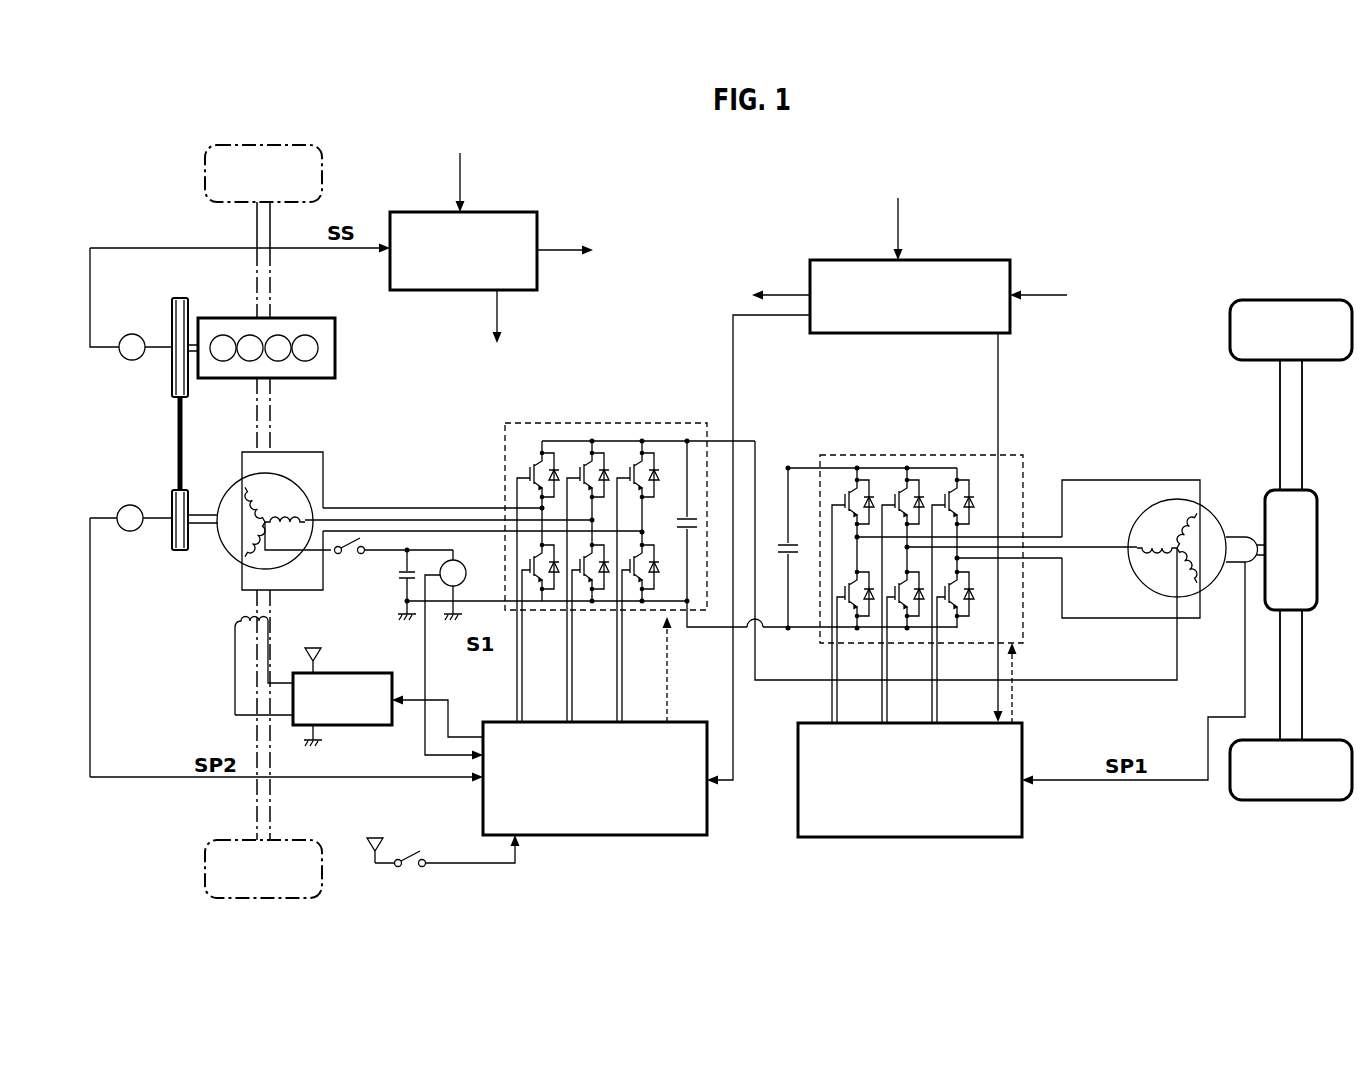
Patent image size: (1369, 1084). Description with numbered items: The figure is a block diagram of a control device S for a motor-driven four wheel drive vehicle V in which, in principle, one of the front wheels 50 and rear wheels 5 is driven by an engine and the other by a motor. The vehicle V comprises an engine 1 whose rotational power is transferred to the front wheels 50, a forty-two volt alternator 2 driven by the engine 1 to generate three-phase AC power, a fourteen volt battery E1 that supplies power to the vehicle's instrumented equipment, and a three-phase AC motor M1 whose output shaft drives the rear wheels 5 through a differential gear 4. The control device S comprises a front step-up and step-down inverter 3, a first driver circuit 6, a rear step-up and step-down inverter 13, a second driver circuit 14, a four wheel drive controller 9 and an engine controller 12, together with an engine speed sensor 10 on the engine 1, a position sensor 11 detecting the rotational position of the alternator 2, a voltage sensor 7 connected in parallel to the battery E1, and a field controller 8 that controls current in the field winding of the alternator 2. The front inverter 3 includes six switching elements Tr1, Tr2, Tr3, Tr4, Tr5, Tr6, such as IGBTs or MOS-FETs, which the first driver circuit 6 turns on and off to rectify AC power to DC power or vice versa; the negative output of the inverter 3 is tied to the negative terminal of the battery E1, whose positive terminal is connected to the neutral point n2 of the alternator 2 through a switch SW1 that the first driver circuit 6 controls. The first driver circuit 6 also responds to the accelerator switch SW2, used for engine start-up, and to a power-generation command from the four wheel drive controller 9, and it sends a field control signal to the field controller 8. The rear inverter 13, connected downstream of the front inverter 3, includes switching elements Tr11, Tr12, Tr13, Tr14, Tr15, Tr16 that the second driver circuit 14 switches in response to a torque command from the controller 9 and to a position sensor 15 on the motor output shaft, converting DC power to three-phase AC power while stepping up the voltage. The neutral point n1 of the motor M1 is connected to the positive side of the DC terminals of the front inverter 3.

The engine 1 is at (337, 348).
The alternator 2 is at (241, 481).
The front step-up and step-down inverter 3 is at (682, 525).
The differential gear 4 is at (1318, 552).
The rear wheels 5 is at (1305, 299).
The first driver circuit 6 is at (655, 836).
The voltage sensor 7 is at (467, 570).
The field controller 8 is at (357, 727).
The four wheel drive controller 9 is at (970, 259).
The engine speed sensor 10 is at (131, 334).
The position sensor 11 is at (131, 505).
The engine controller 12 is at (483, 212).
The rear step-up and step-down inverter 13 is at (900, 541).
The second driver circuit 14 is at (990, 838).
The position sensor 15 is at (1242, 536).
The front wheels 50 is at (323, 172).
The three-phase AC motor M1 is at (1177, 500).
The neutral point n1 is at (1135, 546).
The neutral point n2 is at (289, 500).
The battery E1 is at (394, 584).
The switch SW1 is at (500, 722).
The accelerator switch SW2 is at (413, 876).
The control device S is at (626, 232).
The vehicle V is at (1089, 225).
The switching element Tr1 is at (536, 452).
The switching element Tr2 is at (589, 452).
The switching element Tr3 is at (634, 452).
The switching element Tr4 is at (530, 592).
The switching element Tr5 is at (580, 592).
The switching element Tr6 is at (630, 592).
The switching element Tr11 is at (852, 479).
The switching element Tr12 is at (904, 479).
The switching element Tr13 is at (948, 479).
The switching element Tr14 is at (845, 618).
The switching element Tr15 is at (895, 618).
The switching element Tr16 is at (945, 618).